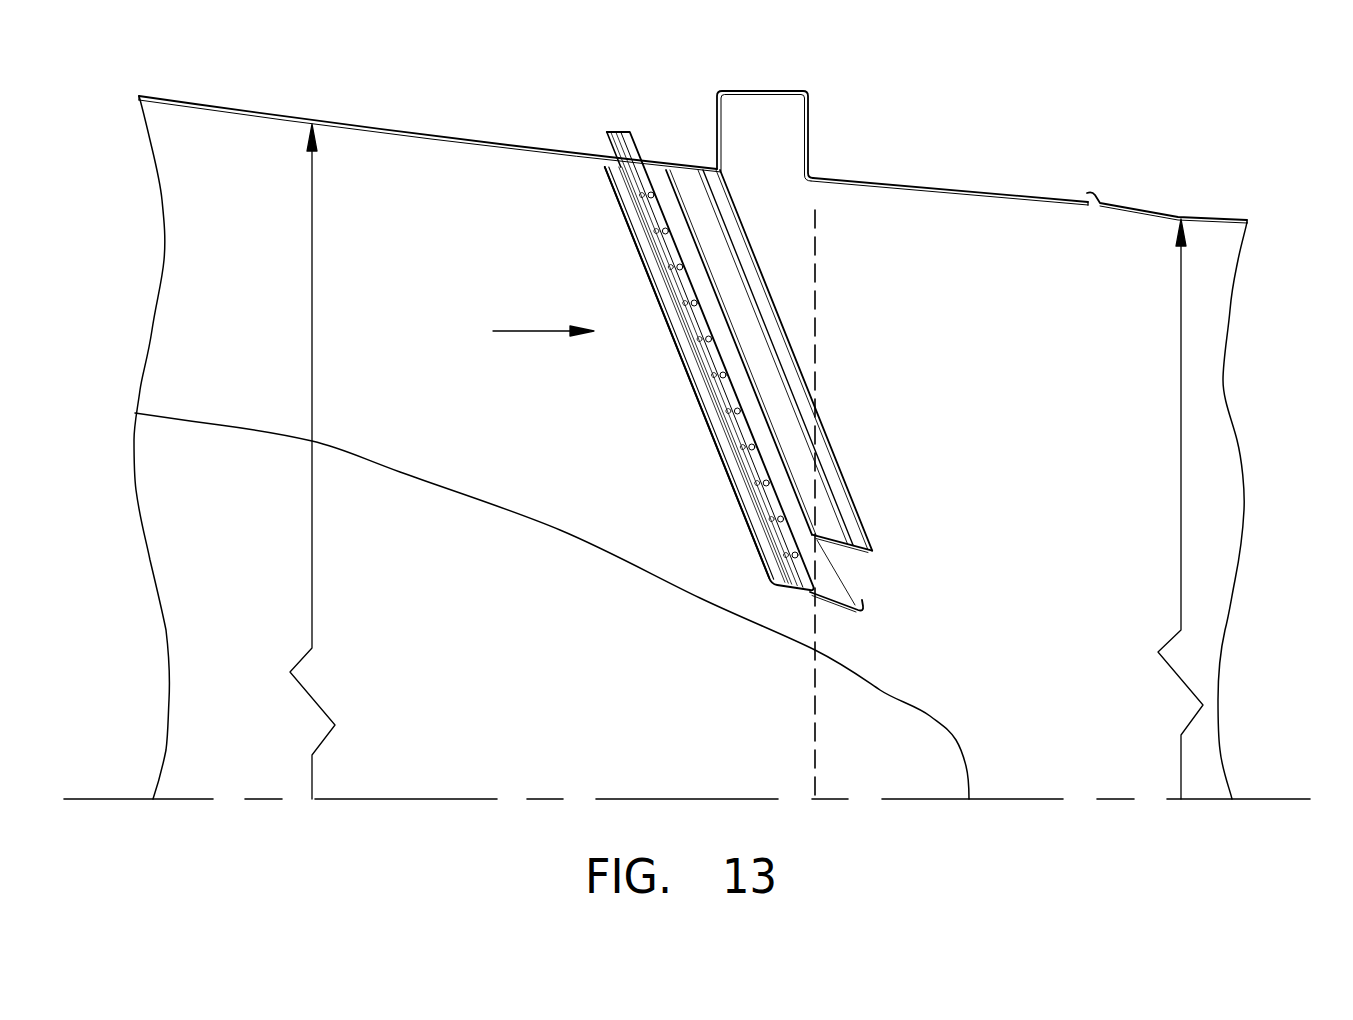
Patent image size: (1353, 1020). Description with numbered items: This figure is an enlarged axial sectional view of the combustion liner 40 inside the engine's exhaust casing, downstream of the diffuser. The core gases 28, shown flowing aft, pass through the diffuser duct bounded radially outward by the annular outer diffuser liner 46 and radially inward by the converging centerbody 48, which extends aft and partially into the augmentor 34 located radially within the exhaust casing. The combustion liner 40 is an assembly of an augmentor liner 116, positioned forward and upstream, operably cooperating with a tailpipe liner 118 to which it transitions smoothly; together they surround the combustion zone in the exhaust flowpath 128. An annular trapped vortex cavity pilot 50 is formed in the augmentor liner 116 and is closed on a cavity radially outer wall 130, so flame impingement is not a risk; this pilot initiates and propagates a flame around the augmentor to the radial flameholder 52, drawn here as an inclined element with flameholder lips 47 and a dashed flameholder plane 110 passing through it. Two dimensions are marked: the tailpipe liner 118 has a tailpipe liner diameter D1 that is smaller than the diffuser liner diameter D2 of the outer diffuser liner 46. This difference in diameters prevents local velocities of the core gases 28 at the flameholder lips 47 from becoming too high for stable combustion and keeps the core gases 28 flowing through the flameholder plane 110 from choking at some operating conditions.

The core gases 28 is at (520, 331).
The augmentor 34 is at (876, 255).
The combustion liner 40 is at (1076, 177).
The outer diffuser liner 46 is at (432, 130).
The flameholder lips 47 is at (746, 236).
The converging centerbody 48 is at (428, 480).
The annular trapped vortex cavity pilot 50 is at (808, 146).
The radial flameholder 52 is at (700, 447).
The flameholder plane 110 is at (819, 346).
The augmentor liner 116 is at (1030, 201).
The tailpipe liner 118 is at (1203, 222).
The exhaust flowpath 128 is at (1043, 618).
The cavity radially outer wall 130 is at (772, 91).
The tailpipe liner diameter D1 is at (1181, 412).
The diffuser liner diameter D2 is at (313, 300).